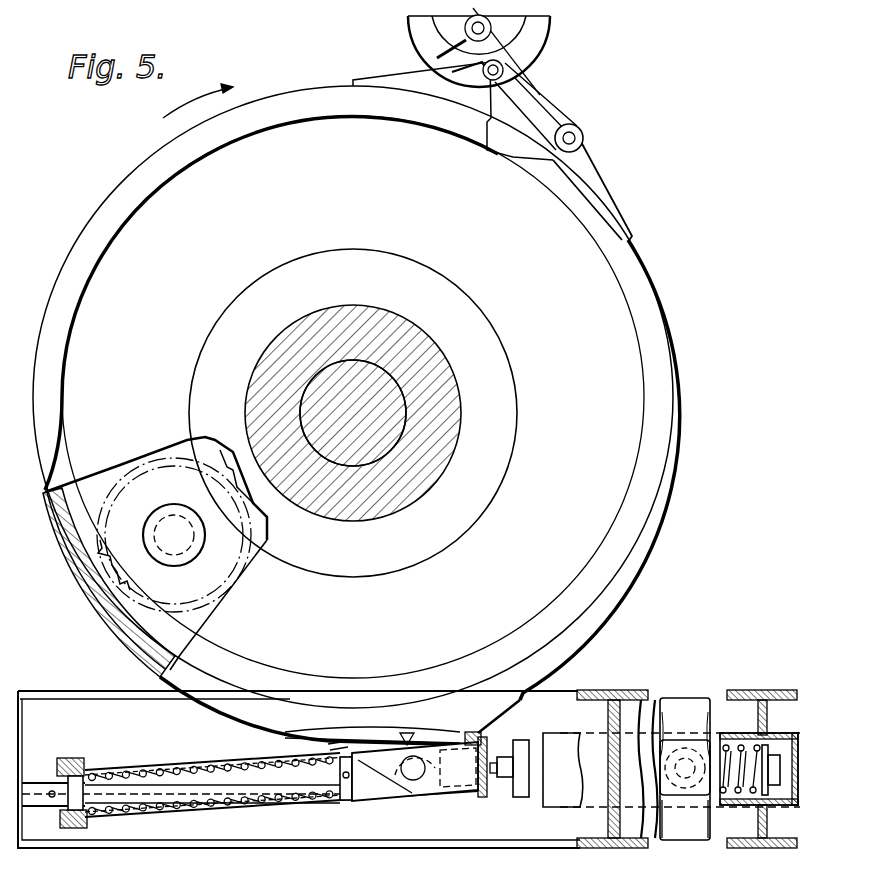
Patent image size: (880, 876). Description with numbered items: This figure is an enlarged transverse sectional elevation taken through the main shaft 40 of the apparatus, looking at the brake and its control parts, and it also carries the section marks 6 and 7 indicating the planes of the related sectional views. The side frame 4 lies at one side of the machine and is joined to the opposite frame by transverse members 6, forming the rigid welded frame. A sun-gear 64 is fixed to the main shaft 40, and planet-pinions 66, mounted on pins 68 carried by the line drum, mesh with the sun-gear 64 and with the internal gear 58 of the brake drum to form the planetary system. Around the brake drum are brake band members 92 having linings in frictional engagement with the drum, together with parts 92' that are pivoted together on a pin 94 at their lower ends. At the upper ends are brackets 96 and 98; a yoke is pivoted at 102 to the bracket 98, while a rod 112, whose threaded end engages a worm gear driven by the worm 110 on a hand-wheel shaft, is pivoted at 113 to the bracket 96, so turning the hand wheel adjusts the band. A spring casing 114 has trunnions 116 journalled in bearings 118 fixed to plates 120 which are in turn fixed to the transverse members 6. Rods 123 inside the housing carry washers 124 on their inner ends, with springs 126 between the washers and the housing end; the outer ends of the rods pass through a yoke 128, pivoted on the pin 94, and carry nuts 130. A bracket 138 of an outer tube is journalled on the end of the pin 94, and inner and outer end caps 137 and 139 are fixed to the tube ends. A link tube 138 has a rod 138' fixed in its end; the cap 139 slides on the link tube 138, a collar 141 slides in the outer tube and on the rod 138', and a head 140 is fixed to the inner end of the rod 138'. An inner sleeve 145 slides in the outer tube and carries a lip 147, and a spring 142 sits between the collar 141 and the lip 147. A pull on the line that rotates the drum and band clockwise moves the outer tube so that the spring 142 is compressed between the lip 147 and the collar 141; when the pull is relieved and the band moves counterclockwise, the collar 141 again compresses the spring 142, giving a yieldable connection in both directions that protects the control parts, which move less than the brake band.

The side frame 4 is at (73, 705).
The transverse members 6 is at (470, 10).
The section line 7- 7 is at (282, 727).
The main shaft 40 is at (355, 455).
The internal gear 58 is at (118, 576).
The sun-gear 64 is at (196, 440).
The planet-pinions 66 is at (150, 460).
The pins or shafts 68 is at (168, 515).
The brake band members 92 is at (260, 431).
The brake band parts 92' is at (482, 491).
The pin 94 is at (413, 781).
The bracket 96 is at (590, 166).
The bracket 98 is at (425, 88).
The pivot 102 is at (484, 80).
The worm 110 is at (552, 40).
The rod 112 is at (560, 118).
The pivot 113 is at (569, 152).
The spring casing 114 is at (548, 770).
The trunnions 116 is at (686, 745).
The bearings 118 is at (697, 793).
The plates 120 is at (685, 700).
The rods 123 is at (732, 800).
The washers 124 is at (782, 800).
The springs 126 is at (762, 735).
The yoke 128 is at (503, 780).
The nuts 130 is at (366, 801).
The inner end cap 137 is at (465, 732).
The link tube 138 is at (181, 769).
The rod 138' is at (281, 791).
The outer end cap 139 is at (78, 760).
The head 140 is at (345, 801).
The collar 141 is at (90, 786).
The spring 142 is at (232, 806).
The inner sleeve 145 is at (404, 733).
The lip 147 is at (333, 744).